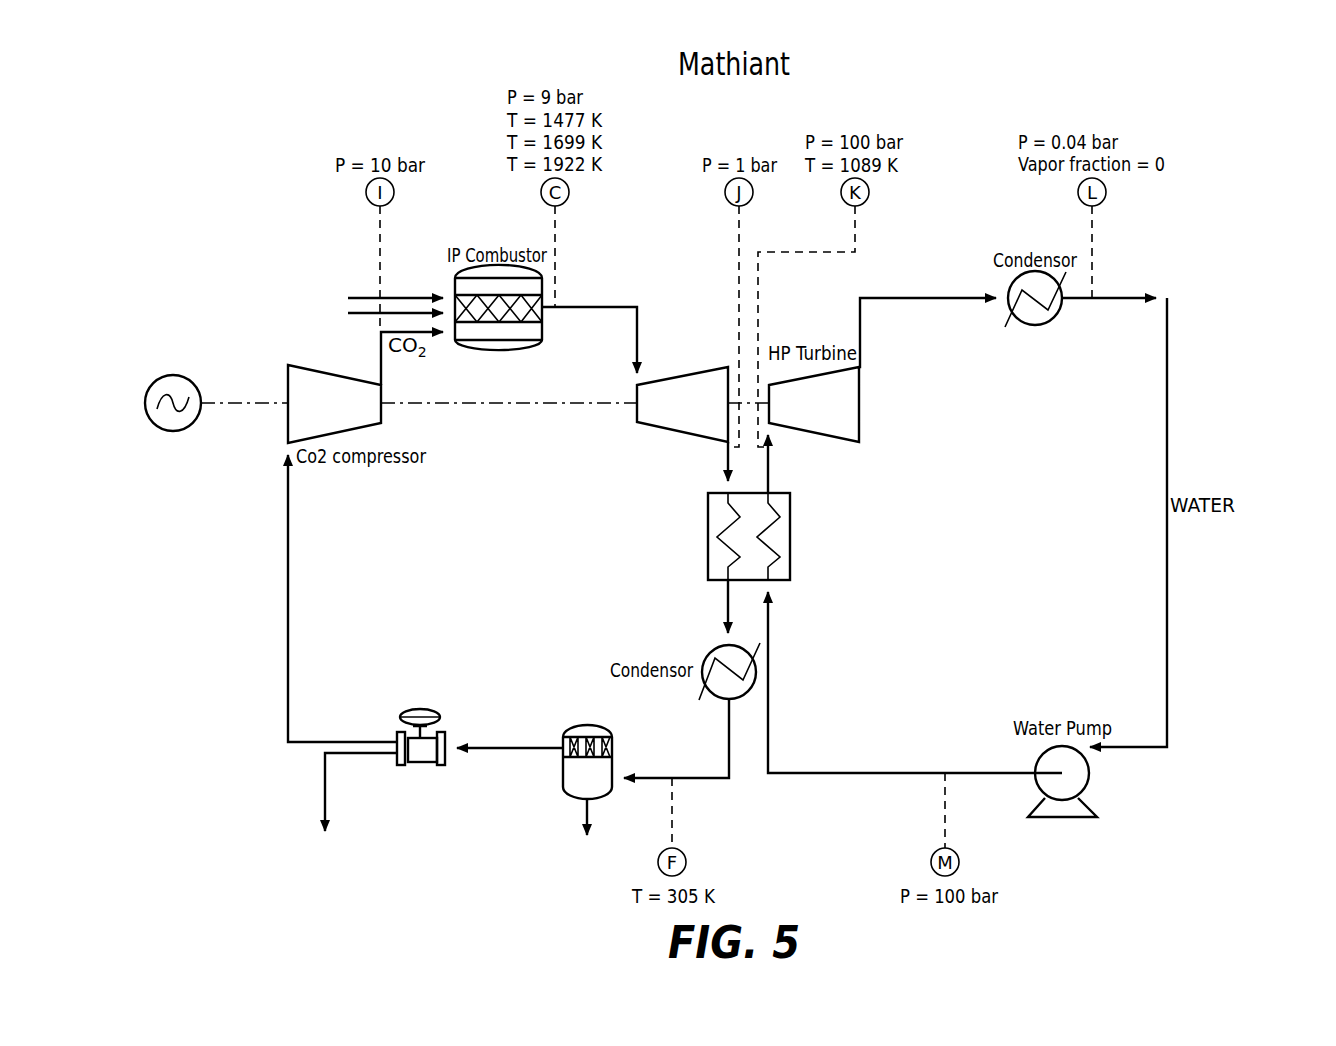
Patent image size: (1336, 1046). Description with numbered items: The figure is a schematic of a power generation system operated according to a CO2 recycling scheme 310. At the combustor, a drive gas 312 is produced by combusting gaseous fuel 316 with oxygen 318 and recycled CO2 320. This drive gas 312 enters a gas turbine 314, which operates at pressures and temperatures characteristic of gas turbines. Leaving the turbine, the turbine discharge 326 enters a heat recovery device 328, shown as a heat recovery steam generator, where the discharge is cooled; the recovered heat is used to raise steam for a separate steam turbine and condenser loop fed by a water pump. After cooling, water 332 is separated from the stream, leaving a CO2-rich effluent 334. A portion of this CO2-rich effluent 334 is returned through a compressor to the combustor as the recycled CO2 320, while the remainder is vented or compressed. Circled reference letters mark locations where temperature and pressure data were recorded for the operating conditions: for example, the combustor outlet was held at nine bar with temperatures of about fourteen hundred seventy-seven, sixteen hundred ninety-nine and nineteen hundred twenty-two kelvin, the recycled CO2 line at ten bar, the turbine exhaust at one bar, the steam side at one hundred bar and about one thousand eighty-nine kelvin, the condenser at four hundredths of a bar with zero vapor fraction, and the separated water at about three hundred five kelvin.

The CO2 recycling scheme 310 is at (1222, 640).
The drive gas 312 is at (620, 307).
The gas turbine 314 is at (657, 430).
The gaseous fuel 316 is at (358, 297).
The oxygen 318 is at (358, 314).
The recycled CO2 320 is at (288, 602).
The turbine discharge 326 is at (728, 468).
The heat recovery device 328 is at (788, 581).
The water 332 is at (587, 817).
The CO2-rich effluent 334 is at (288, 676).